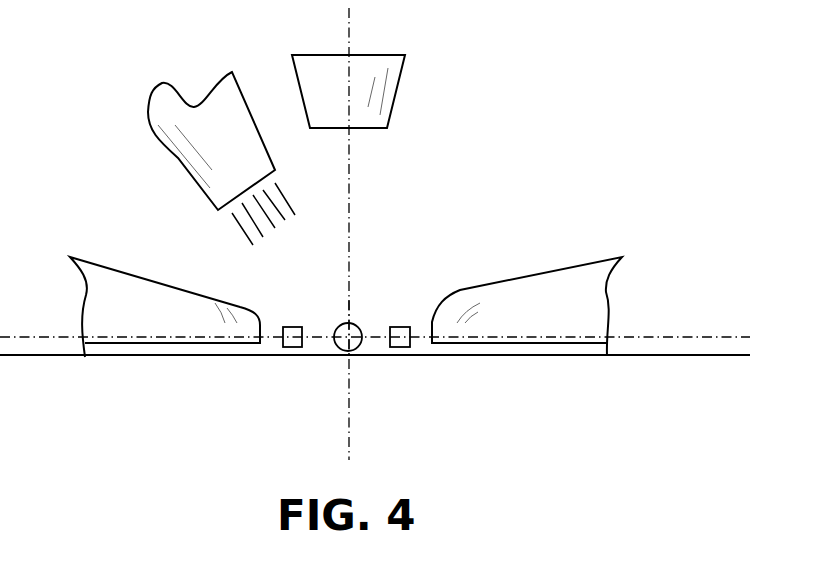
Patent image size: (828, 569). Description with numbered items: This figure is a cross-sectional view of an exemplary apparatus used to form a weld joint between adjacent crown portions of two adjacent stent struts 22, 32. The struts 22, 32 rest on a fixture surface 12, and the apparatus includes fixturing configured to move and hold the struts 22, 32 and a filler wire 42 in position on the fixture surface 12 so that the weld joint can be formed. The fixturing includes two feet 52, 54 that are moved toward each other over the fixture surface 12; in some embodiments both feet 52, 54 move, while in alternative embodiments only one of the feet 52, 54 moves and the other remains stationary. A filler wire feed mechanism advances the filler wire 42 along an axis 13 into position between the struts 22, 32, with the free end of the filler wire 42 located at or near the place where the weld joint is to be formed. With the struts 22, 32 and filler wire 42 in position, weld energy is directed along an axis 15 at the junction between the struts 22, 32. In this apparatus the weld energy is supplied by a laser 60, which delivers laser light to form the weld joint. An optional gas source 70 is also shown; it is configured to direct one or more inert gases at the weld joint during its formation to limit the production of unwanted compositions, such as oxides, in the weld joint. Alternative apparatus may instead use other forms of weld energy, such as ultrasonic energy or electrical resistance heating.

The fixture surface 12 is at (385, 355).
The axis 13 is at (357, 343).
The axis 15 is at (349, 163).
The strut 22 is at (397, 327).
The strut 32 is at (295, 327).
The filler wire 42 is at (337, 340).
The foot 52 is at (568, 267).
The foot 54 is at (158, 275).
The laser 60 is at (395, 93).
The gas source 70 is at (180, 161).